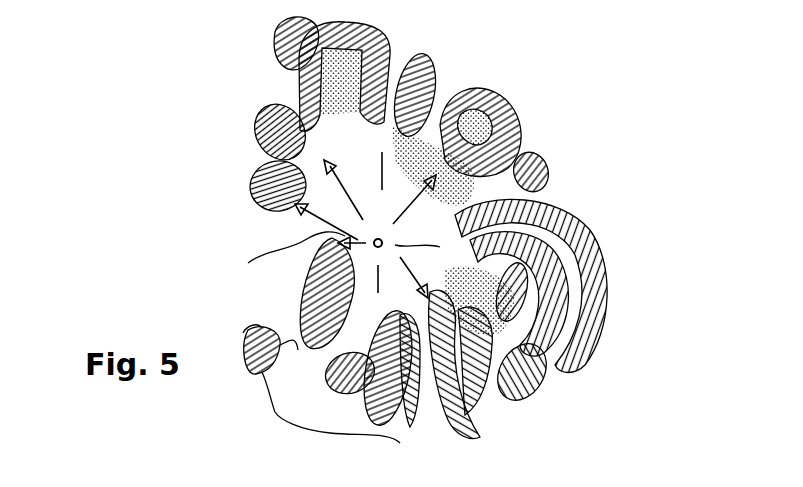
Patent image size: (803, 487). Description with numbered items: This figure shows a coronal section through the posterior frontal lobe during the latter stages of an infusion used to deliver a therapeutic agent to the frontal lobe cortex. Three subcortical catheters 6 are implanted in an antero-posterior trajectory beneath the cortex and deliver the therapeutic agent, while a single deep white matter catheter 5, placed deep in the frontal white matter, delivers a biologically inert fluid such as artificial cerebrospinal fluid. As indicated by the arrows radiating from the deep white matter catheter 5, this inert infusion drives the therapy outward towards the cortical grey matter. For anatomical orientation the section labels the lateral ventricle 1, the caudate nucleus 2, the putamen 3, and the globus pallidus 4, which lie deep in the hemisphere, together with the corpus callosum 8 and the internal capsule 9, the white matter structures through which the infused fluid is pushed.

The lateral ventricle 1 is at (268, 293).
The caudate nucleus 2 is at (316, 284).
The putamen 3 is at (398, 369).
The globus pallidus 4 is at (358, 363).
The deep white matter catheter 5 is at (388, 243).
The subcortical catheters 6 is at (483, 280).
The corpus callosum 8 is at (270, 232).
The internal capsule 9 is at (318, 360).